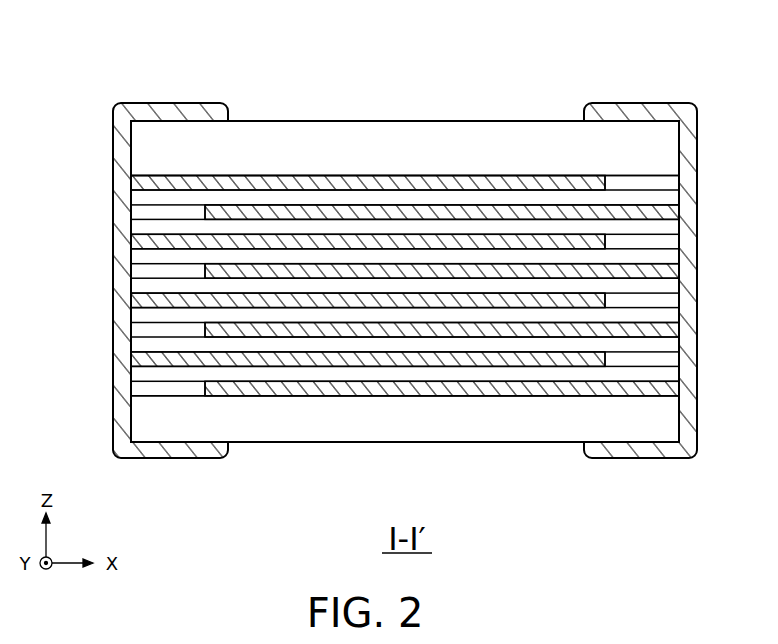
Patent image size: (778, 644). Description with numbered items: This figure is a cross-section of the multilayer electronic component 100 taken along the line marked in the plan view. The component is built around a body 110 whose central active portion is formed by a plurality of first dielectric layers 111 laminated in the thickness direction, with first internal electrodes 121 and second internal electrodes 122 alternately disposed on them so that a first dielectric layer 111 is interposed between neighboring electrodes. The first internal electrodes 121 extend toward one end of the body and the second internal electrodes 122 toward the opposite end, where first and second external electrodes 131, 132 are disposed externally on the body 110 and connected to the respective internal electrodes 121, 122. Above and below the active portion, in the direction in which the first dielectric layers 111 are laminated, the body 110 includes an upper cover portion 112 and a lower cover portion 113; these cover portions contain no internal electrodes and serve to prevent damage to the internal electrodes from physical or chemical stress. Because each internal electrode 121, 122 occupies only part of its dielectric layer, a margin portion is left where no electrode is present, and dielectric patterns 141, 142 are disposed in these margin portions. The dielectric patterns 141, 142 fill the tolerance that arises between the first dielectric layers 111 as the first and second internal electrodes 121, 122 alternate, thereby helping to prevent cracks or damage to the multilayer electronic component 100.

The multilayer electronic component 100 is at (255, 32).
The body 110 is at (387, 121).
The first dielectric layer 111 is at (487, 375).
The upper cover portion 112 is at (458, 143).
The lower cover portion 113 is at (253, 428).
The first internal electrode 121 is at (340, 357).
The second internal electrode 122 is at (378, 388).
The first external electrode 131 is at (170, 103).
The second external electrode 132 is at (642, 103).
The dielectric pattern 141 is at (645, 360).
The dielectric pattern 142 is at (175, 330).